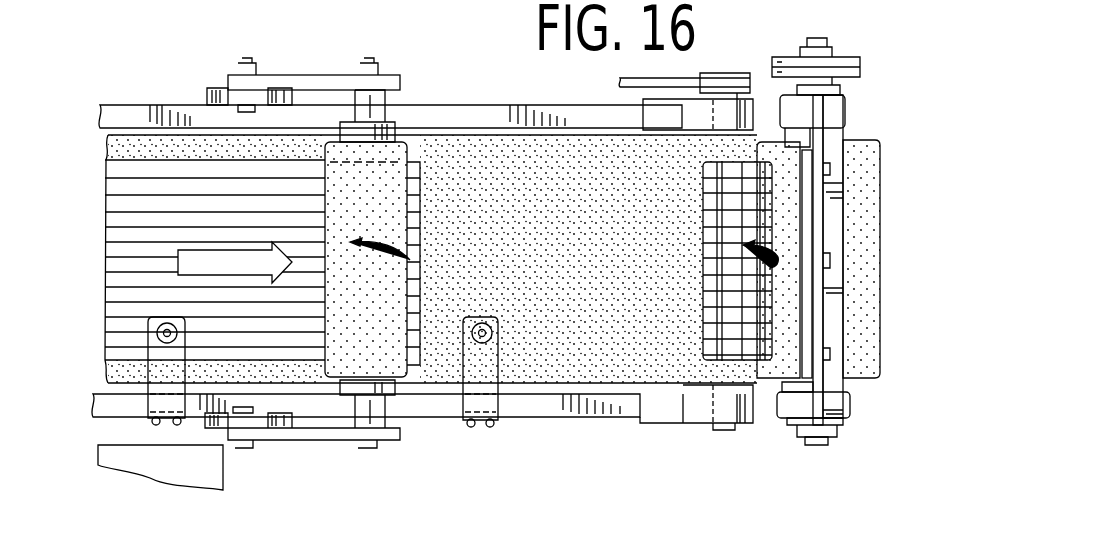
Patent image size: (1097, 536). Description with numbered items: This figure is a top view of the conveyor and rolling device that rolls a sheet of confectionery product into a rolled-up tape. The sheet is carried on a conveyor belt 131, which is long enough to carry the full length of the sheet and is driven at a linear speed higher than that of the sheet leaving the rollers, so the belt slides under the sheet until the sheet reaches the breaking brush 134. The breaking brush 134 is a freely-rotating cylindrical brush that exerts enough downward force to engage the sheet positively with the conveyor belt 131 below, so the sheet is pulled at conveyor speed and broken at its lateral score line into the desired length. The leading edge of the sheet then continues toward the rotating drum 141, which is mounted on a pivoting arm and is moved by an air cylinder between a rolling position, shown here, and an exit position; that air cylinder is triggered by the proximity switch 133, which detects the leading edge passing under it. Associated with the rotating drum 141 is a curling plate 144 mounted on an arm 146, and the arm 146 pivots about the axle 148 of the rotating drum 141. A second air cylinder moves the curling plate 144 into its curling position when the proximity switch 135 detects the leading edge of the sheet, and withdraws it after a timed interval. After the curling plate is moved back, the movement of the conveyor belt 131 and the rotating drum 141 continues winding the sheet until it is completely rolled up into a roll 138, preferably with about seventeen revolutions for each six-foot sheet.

The conveyor belt 131 is at (500, 170).
The proximity switch 133 is at (160, 340).
The breaking brush 134 is at (337, 155).
The proximity switch 135 is at (493, 338).
The roll 138 is at (703, 332).
The rotating drum 141 is at (863, 370).
The curling plate 144 is at (807, 218).
The arm 146 is at (790, 97).
The axle 148 is at (815, 445).